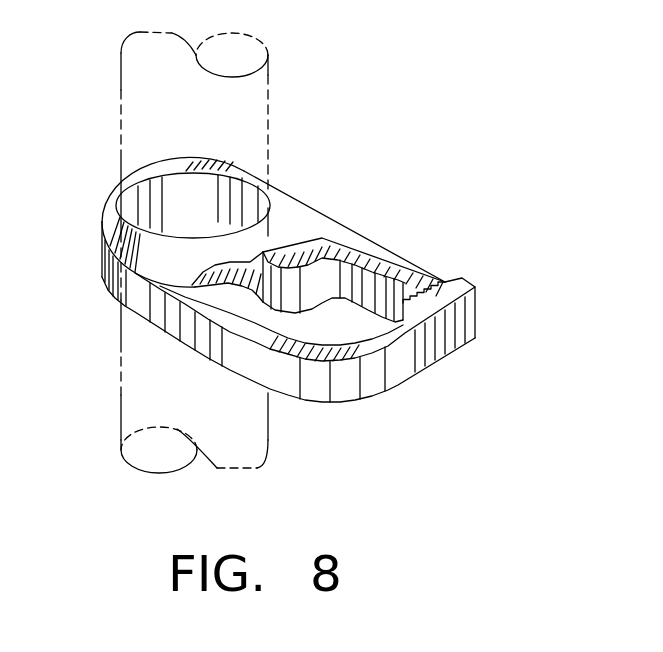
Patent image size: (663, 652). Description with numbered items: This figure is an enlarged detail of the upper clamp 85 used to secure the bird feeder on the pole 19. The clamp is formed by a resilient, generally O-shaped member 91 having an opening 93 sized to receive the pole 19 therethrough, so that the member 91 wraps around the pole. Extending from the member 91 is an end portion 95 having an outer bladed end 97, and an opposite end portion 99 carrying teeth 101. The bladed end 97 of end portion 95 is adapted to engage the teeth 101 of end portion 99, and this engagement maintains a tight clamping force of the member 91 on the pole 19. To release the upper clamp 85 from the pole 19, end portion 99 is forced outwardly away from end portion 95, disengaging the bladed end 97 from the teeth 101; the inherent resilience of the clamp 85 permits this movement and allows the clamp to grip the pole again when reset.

The pole 19 is at (268, 80).
The upper clamp 85 is at (303, 305).
The O-shaped member 91 is at (192, 284).
The opening 93 is at (162, 177).
The end portion 95 is at (362, 255).
The bladed end 97 is at (443, 281).
The opposite end portion 99 is at (371, 384).
The teeth 101 is at (440, 277).